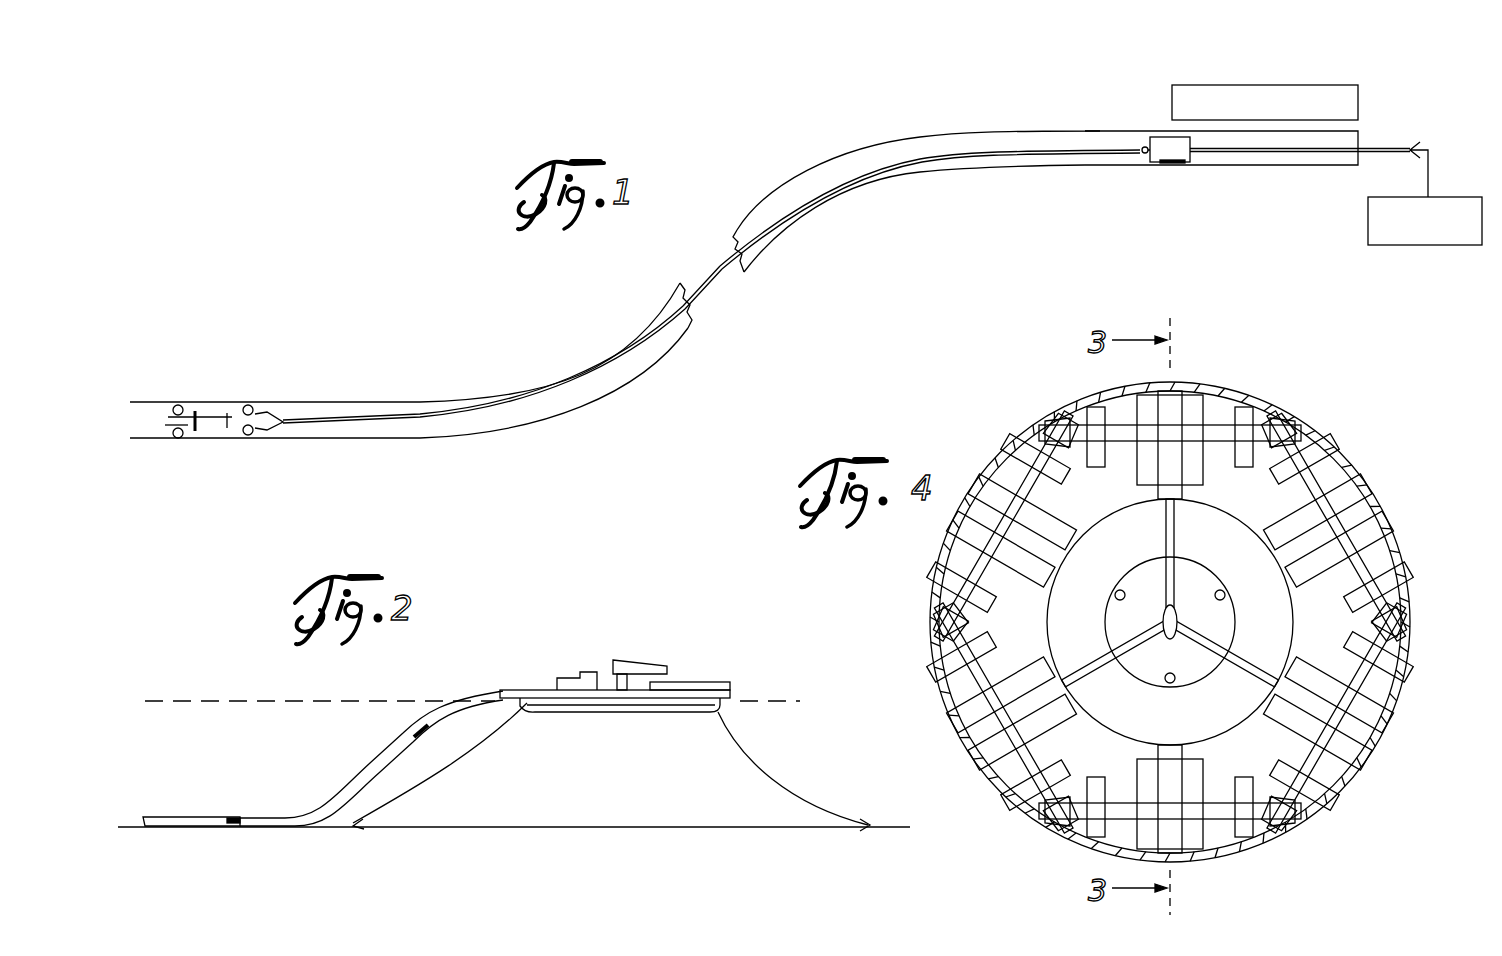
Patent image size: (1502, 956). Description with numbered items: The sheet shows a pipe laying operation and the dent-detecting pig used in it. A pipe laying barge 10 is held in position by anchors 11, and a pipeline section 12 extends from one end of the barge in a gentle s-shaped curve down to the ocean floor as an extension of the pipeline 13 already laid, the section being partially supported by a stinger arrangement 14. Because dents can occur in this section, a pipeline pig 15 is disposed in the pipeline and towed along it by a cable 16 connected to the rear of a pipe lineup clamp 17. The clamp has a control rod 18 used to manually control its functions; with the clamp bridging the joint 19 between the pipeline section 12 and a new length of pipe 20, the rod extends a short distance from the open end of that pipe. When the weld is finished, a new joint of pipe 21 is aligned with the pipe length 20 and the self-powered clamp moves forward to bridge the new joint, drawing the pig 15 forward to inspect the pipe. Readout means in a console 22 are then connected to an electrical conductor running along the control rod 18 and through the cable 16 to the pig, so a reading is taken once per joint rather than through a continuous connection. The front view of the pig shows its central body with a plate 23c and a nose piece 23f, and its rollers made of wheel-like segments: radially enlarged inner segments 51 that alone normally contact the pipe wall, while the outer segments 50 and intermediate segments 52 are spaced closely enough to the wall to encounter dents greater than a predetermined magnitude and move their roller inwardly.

In FIG. 2, the pipe laying barge 10 is at (700, 690).
In FIG. 2, the anchors 11 is at (354, 830).
In FIG. 1, the pipeline section 12 is at (821, 162).
In FIG. 2, the pipeline section 12 is at (380, 756).
In FIG. 2, the pipeline 13 is at (165, 817).
In FIG. 4, the pipeline 13 is at (1335, 461).
In FIG. 2, the stinger arrangement 14 is at (432, 732).
In FIG. 1, the pipeline pig 15 is at (216, 402).
In FIG. 2, the pipeline pig 15 is at (231, 818).
In FIG. 1, the cable 16 is at (409, 416).
In FIG. 1, the pipe lineup clamp 17 is at (1163, 138).
In FIG. 1, the control rod 18 is at (1238, 152).
In FIG. 1, the joint 19 is at (1165, 164).
In FIG. 1, the new length of pipe 20 is at (1286, 168).
In FIG. 1, the new joint of pipe 21 is at (1285, 88).
In FIG. 1, the console 22 is at (1425, 247).
In FIG. 4, the plate 23c is at (1282, 636).
In FIG. 4, the nose piece 23f is at (1180, 579).
In FIG. 4, the outer segments 50 is at (1055, 430).
In FIG. 4, the inner segments 51 is at (1160, 392).
In FIG. 4, the intermediate segments 52 is at (1245, 412).